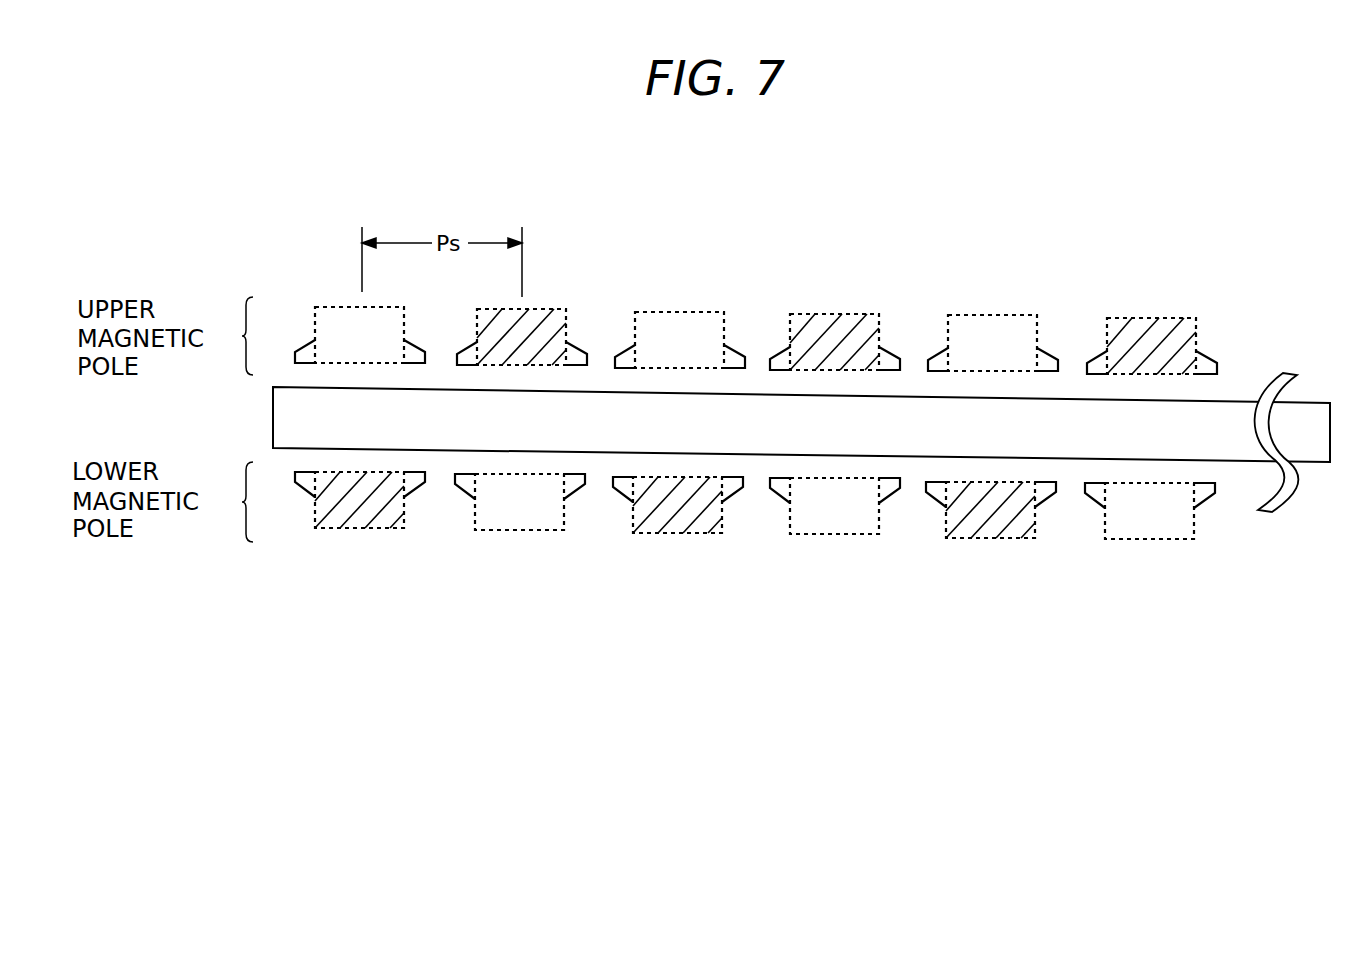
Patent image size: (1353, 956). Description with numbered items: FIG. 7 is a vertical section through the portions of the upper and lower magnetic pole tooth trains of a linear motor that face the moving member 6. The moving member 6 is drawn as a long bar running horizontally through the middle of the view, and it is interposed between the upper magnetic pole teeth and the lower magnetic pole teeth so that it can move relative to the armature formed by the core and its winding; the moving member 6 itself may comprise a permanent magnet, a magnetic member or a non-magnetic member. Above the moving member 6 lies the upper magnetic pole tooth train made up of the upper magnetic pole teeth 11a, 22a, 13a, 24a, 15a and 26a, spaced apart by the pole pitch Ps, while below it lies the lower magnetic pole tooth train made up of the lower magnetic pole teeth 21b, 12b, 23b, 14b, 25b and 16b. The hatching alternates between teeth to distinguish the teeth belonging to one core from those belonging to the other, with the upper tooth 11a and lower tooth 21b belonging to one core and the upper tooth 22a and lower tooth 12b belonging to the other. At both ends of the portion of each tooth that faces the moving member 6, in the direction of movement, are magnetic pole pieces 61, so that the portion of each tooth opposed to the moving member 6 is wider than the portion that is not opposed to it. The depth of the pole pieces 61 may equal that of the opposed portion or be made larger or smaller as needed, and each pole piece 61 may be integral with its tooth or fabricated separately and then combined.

The moving member 6 is at (1211, 401).
The upper magnetic pole tooth 11a is at (333, 307).
The upper magnetic pole tooth 22a is at (553, 308).
The upper magnetic pole tooth 13a is at (682, 312).
The upper magnetic pole tooth 24a is at (835, 315).
The upper magnetic pole tooth 15a is at (992, 315).
The upper magnetic pole tooth 26a is at (1145, 318).
The lower magnetic pole tooth 21b is at (357, 529).
The lower magnetic pole tooth 12b is at (518, 530).
The lower magnetic pole tooth 23b is at (678, 533).
The lower magnetic pole tooth 14b is at (832, 534).
The lower magnetic pole tooth 25b is at (998, 537).
The lower magnetic pole tooth 16b is at (1150, 539).
The magnetic pole piece 61 is at (735, 352).